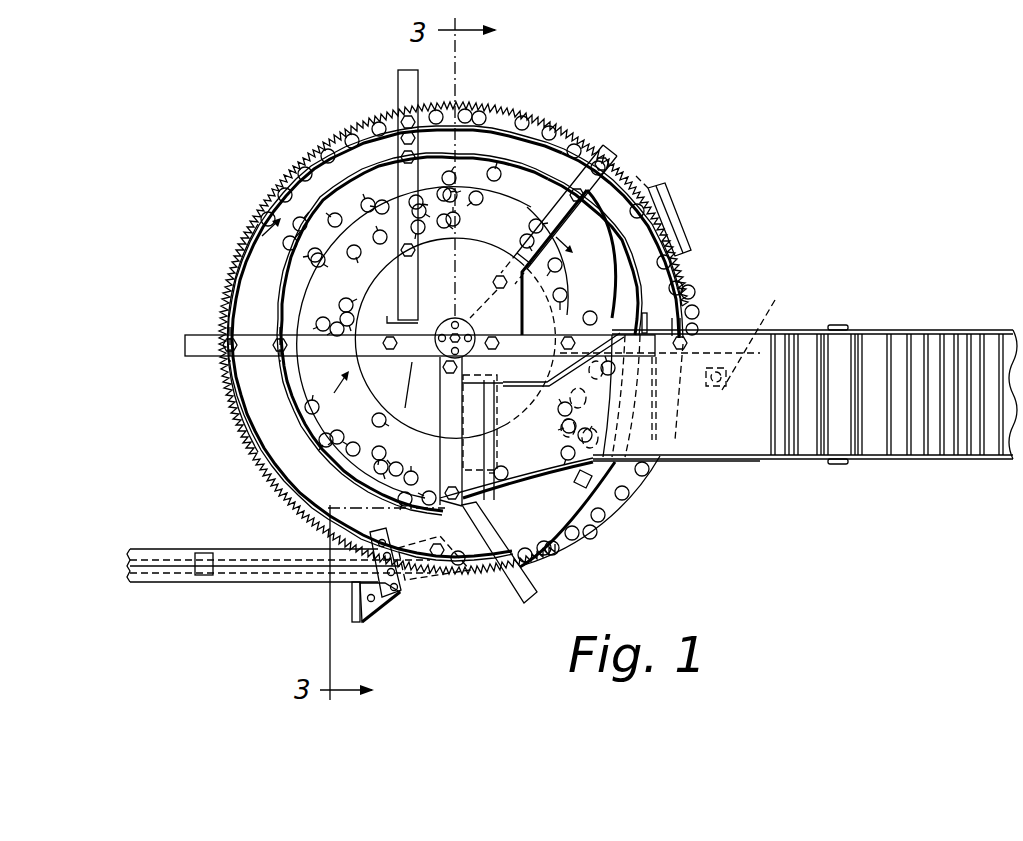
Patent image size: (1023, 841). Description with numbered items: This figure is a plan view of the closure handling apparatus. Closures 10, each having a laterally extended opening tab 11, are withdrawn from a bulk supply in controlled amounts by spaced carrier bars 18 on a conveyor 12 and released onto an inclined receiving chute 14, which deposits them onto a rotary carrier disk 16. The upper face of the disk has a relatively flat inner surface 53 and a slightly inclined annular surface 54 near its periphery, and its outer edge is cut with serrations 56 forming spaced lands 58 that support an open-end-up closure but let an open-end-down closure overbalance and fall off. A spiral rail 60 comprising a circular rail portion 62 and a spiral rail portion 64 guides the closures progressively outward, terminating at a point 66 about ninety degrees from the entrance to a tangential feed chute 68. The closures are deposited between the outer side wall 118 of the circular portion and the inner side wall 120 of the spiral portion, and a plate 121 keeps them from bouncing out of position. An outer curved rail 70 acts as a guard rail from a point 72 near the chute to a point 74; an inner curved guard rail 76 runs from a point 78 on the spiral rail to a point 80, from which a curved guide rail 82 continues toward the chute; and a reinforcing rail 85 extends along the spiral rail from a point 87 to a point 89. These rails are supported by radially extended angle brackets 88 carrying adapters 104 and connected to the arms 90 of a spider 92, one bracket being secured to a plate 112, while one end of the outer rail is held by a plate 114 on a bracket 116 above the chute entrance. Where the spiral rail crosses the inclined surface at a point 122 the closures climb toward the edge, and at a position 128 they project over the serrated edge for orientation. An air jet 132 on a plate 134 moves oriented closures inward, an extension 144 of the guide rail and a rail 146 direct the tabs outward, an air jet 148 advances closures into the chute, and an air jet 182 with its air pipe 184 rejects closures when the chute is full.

The closures 10 is at (283, 239).
The opening tabs 11 is at (295, 222).
The conveyor 12 is at (940, 330).
The receiving chute 14 is at (762, 460).
The rotary carrier disk 16 is at (684, 278).
The carrier bars 18 is at (873, 347).
The flat inner surface 53 is at (472, 227).
The inclined annular surface 54 is at (265, 297).
The serrations 56 is at (468, 101).
The lands 58 is at (489, 103).
The spiral rail 60 is at (300, 427).
The circular rail portion 62 is at (362, 273).
The spiral rail portion 64 is at (547, 122).
The terminating point 66 is at (660, 396).
The feed chute 68 is at (152, 589).
The outer curved rail 70 is at (222, 319).
The point 72 is at (341, 523).
The point 74 is at (415, 103).
The inner curved guard rail 76 is at (631, 270).
The point 78 is at (327, 217).
The point 80 is at (641, 326).
The curved guide rail 82 is at (612, 482).
The reinforcing rail 85 is at (652, 228).
The point 87 is at (572, 152).
The angle brackets 88 is at (412, 170).
The point 89 is at (675, 323).
The arms 90 is at (482, 398).
The spider 92 is at (450, 320).
The adapters 104 is at (278, 350).
The plate 112 is at (523, 290).
The plate 114 is at (394, 535).
The bracket 116 is at (362, 619).
The outer side wall 118 is at (409, 395).
The inner side wall 120 is at (440, 495).
The plate 121 is at (497, 430).
The point 122 is at (447, 549).
The position 128 is at (648, 178).
The air jet 132 is at (762, 340).
The plate 134 is at (716, 392).
The extension 144 is at (497, 537).
The rail 146 is at (521, 598).
The air jet 148 is at (440, 566).
The air jet 182 is at (574, 482).
The air pipe 184 is at (600, 500).